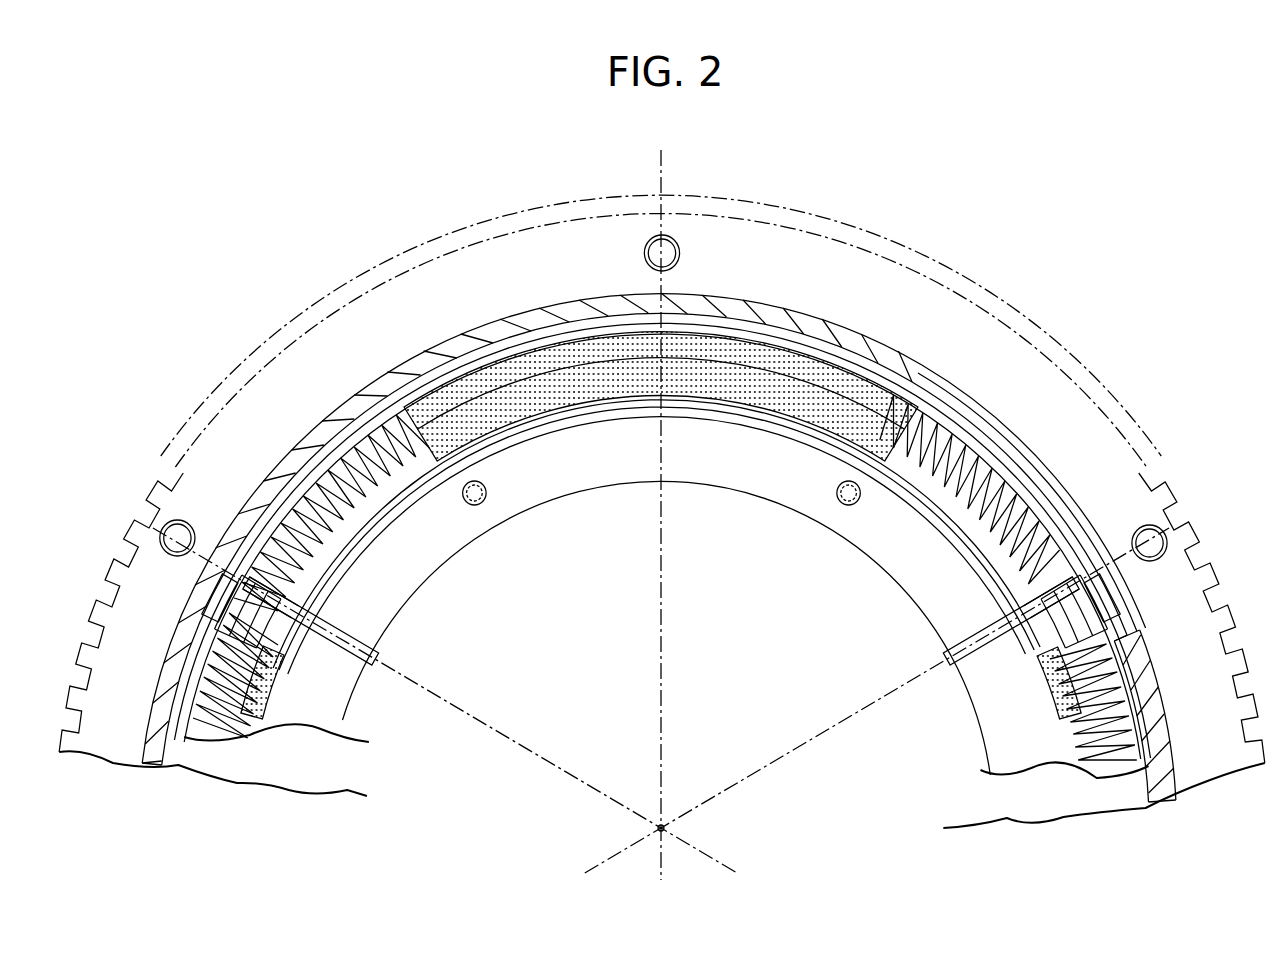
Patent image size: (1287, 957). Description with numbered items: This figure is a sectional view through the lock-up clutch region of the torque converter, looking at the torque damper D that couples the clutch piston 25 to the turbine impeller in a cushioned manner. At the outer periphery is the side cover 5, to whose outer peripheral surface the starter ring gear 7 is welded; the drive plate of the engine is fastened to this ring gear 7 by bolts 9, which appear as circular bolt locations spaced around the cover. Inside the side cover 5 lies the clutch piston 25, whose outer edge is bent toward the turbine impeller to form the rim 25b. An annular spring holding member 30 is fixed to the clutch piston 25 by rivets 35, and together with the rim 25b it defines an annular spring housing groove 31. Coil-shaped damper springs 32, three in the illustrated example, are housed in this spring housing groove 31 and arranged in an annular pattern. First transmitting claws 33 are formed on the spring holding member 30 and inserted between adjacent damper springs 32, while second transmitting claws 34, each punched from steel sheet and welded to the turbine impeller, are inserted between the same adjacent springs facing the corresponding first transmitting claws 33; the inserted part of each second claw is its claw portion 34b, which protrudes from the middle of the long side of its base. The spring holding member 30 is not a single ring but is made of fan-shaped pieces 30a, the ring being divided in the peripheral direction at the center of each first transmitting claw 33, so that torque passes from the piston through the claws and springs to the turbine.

The side cover 5 is at (470, 338).
The starter ring gear 7 is at (1230, 765).
The bolt 9 is at (645, 252).
The clutch piston 25 is at (1060, 772).
The rim 25b is at (1012, 478).
The annular spring holding member 30 is at (748, 360).
The fan-shaped pieces 30a is at (743, 488).
The spring housing groove 31 is at (948, 450).
The damper springs 32 is at (348, 462).
The first transmitting claws 33 is at (235, 594).
The second transmitting claws 34 is at (297, 625).
The claw portion 34b is at (300, 602).
The rivets 35 is at (478, 505).
The torque damper D is at (1160, 650).